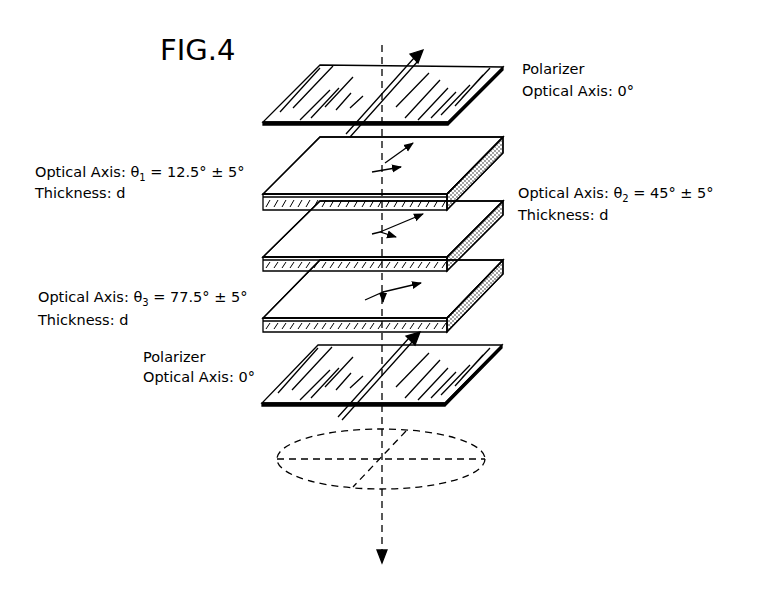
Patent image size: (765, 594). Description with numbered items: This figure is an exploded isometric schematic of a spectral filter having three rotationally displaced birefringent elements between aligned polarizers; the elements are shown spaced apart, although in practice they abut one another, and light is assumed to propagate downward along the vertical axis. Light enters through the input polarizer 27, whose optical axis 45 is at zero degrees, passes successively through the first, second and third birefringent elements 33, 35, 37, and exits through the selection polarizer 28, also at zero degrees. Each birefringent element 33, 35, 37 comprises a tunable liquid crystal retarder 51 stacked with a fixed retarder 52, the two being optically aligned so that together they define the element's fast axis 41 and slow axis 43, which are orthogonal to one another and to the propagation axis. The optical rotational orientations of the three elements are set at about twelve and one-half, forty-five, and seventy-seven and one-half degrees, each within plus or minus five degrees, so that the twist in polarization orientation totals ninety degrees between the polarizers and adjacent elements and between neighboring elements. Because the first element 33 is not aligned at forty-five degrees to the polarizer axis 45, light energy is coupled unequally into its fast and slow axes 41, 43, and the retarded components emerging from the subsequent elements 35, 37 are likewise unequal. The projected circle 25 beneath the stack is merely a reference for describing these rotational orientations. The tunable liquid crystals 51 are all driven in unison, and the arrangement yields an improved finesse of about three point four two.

The projected reference circle 25 is at (430, 488).
The input polarizer 27 is at (463, 92).
The selection polarizer 28 is at (483, 356).
The first birefringent element 33 is at (543, 140).
The second birefringent element 35 is at (245, 259).
The third birefringent element 37 is at (533, 275).
The fast axis 41 is at (412, 147).
The slow axis 43 is at (366, 241).
The optical axis of the input polarizer 45 is at (413, 52).
The tunable liquid crystal retarder 51 is at (327, 145).
The fixed retarder 52 is at (477, 169).